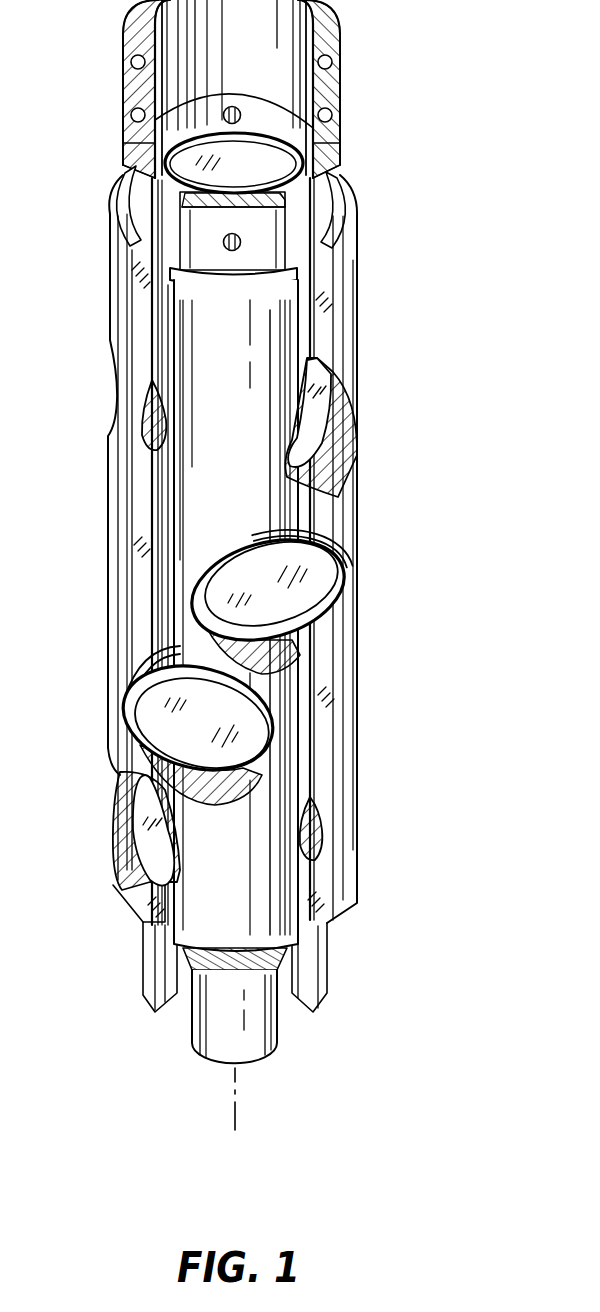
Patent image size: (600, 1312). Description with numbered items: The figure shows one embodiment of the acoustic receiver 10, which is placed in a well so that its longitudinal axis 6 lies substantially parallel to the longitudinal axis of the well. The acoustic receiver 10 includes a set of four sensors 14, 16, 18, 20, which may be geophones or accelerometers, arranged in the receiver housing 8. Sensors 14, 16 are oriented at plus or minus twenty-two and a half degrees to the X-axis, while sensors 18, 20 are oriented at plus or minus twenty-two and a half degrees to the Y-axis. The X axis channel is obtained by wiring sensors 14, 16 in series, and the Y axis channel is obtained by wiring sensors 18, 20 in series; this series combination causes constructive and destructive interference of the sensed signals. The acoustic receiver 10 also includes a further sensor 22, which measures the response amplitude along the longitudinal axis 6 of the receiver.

The longitudinal axis 6 is at (235, 1086).
The receiver housing 8 is at (360, 292).
The acoustic receiver 10 is at (446, 313).
The sensor 14 is at (138, 797).
The sensor 16 is at (158, 687).
The sensor 18 is at (325, 560).
The sensor 20 is at (318, 428).
The sensor 22 is at (265, 168).